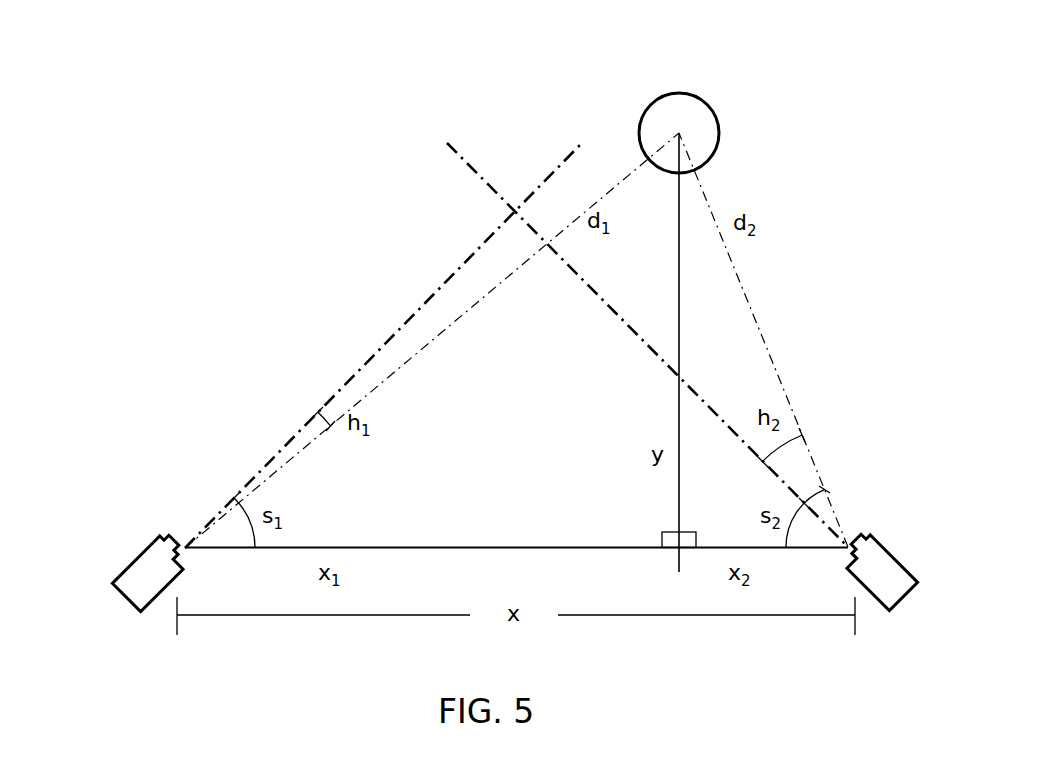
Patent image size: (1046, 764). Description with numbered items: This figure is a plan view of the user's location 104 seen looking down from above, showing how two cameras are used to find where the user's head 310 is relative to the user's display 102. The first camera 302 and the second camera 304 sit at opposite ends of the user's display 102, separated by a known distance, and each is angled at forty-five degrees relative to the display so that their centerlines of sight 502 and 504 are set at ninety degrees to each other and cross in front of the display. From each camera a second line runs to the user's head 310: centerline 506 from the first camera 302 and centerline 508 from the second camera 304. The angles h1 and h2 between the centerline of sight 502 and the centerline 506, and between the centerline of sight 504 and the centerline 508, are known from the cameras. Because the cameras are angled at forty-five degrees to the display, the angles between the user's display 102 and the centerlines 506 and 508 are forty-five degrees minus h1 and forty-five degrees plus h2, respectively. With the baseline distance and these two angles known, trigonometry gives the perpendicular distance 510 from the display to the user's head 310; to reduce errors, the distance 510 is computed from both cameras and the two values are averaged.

The user's location 104 is at (812, 62).
The user's display 102 is at (548, 547).
The first camera 302 is at (137, 562).
The second camera 304 is at (902, 560).
The user's head 310 is at (697, 100).
The centerline of sight of first camera 502 is at (563, 160).
The centerline of sight of second camera 504 is at (473, 172).
The centerline to user's head from first camera 506 is at (410, 355).
The centerline to user's head from second camera 508 is at (740, 272).
The distance to user's head 510 is at (678, 477).